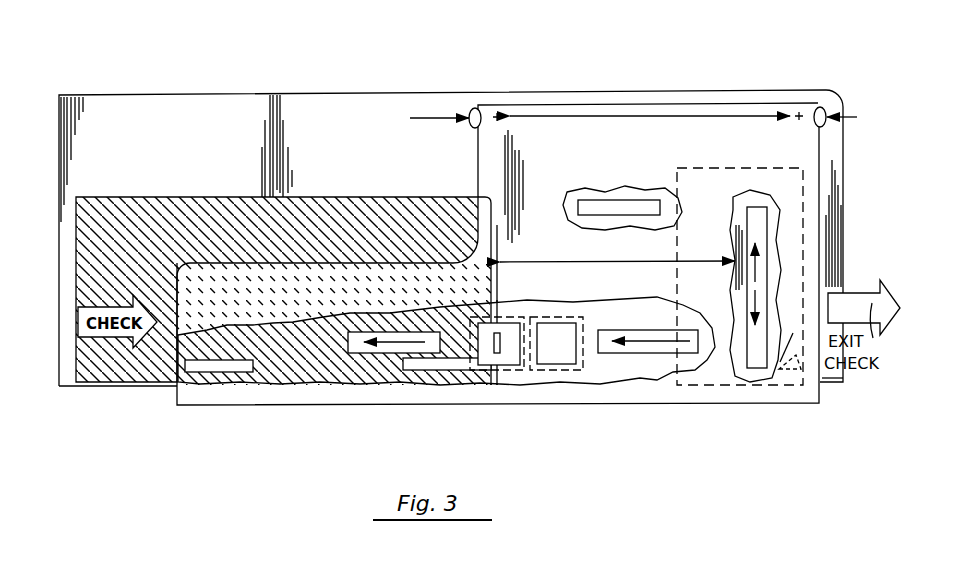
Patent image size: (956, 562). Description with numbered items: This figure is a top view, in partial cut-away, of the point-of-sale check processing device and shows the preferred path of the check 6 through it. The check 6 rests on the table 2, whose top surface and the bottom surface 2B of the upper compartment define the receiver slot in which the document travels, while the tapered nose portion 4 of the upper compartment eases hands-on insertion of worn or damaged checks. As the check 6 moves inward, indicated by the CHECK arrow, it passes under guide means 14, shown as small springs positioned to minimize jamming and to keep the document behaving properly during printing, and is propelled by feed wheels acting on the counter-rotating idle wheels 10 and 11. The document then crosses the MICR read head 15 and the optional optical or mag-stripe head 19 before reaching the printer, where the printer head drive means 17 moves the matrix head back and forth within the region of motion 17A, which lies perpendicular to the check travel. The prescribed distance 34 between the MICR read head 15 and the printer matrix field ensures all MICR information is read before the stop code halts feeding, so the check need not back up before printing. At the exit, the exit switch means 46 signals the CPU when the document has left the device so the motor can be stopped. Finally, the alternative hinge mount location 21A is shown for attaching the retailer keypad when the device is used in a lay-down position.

The table 2 is at (215, 120).
The bottom surface of upper compartment 2B is at (410, 256).
The tapered nose portion 4 is at (400, 398).
The check 6 is at (211, 226).
The idle wheel 10 is at (347, 341).
The idle wheel 11 is at (668, 354).
The guide means 14 is at (600, 207).
The MICR read head 15 is at (506, 356).
The printer head drive means 17 is at (760, 230).
The printer head region of motion 17A is at (740, 261).
The optical or mag-stripe head 19 is at (561, 350).
The alternative hinge mount location 21A is at (440, 118).
The prescribed distance 34 is at (620, 265).
The exit switch means 46 is at (791, 372).